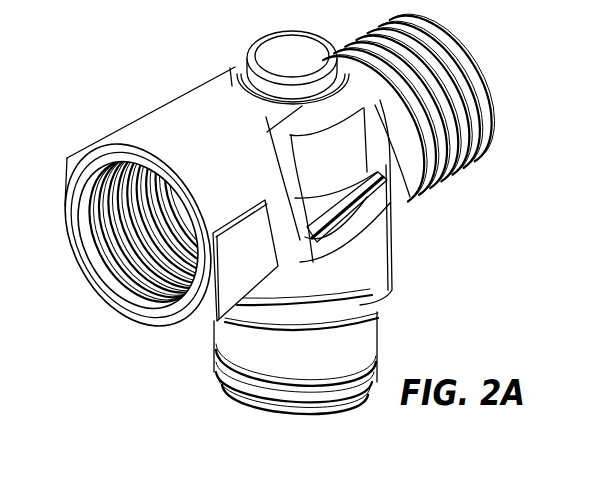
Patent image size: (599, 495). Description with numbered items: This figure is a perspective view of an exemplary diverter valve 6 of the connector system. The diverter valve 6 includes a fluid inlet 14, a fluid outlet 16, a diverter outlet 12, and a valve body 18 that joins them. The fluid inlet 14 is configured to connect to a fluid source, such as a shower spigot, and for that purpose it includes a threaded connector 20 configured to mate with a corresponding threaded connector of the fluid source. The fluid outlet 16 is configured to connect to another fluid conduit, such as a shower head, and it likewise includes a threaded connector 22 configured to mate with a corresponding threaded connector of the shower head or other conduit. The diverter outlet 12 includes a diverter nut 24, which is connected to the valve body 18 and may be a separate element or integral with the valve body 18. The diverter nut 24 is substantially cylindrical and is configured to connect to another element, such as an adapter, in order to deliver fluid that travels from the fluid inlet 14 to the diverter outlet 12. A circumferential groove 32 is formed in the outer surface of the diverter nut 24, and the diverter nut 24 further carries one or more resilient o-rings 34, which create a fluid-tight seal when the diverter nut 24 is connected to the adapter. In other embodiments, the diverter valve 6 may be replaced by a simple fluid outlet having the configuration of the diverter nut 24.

The diverter valve 6 is at (132, 63).
The diverter outlet 12 is at (352, 335).
The fluid inlet 14 is at (128, 138).
The fluid outlet 16 is at (482, 149).
The valve body 18 is at (233, 68).
The threaded connector 20 is at (107, 240).
The threaded connector 22 is at (383, 27).
The diverter nut 24 is at (267, 384).
The circumferential groove 32 is at (352, 313).
The resilient o-rings 34 is at (227, 388).